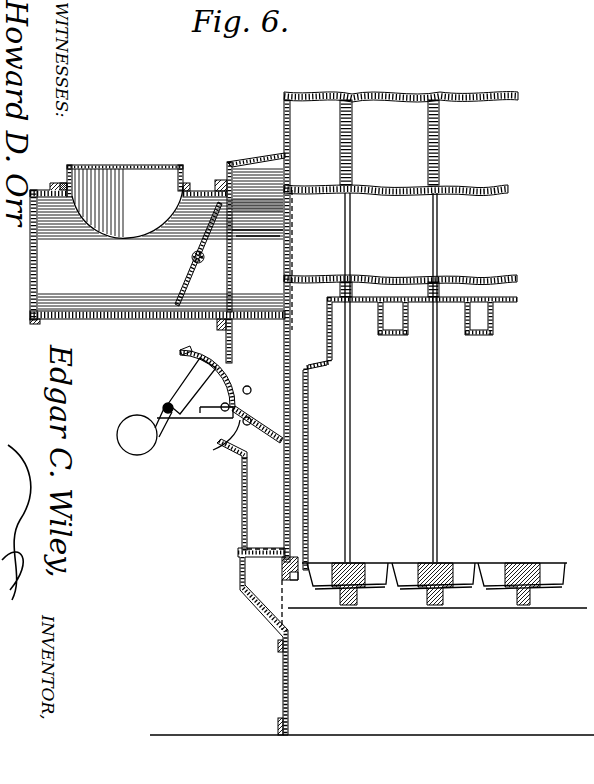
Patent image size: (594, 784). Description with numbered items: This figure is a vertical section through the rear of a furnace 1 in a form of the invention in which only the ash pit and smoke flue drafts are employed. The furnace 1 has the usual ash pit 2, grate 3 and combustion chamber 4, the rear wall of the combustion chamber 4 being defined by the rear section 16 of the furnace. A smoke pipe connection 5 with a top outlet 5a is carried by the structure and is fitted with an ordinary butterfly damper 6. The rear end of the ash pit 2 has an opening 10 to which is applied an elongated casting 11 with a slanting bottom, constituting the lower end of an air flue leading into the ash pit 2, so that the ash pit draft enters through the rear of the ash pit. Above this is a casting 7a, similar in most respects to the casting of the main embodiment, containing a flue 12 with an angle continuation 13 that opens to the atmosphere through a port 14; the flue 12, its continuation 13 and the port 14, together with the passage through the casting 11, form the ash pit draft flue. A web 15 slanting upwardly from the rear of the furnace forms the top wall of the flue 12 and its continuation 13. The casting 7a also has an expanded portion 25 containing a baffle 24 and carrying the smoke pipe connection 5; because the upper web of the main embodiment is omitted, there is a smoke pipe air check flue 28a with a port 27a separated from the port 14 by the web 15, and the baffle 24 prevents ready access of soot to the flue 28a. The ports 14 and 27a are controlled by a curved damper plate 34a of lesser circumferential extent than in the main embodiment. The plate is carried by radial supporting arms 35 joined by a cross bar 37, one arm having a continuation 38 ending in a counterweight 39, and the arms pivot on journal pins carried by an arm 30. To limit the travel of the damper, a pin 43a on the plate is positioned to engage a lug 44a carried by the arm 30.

The furnace 1 is at (404, 92).
The ash pit 2 is at (372, 671).
The grate 3 is at (412, 562).
The combustion chamber 4 is at (425, 335).
The smoke pipe connection 5 is at (157, 251).
The top outlet 5a is at (131, 185).
The butterfly damper 6 is at (188, 270).
The casting 7a is at (226, 340).
The opening 10 is at (287, 612).
The elongated casting 11 is at (263, 606).
The flue 12 is at (263, 504).
The angle continuation 13 is at (245, 452).
The port 14 is at (210, 468).
The web 15 is at (283, 430).
The rear section 16 is at (308, 495).
The baffle 24 is at (251, 310).
The expanded portion 25 is at (243, 160).
The port 27a is at (238, 396).
The smoke pipe air check flue 28a is at (236, 380).
The arm 30 is at (208, 418).
The curved damper plate 34a is at (192, 366).
The radial supporting arms 35 is at (195, 427).
The cross bar 37 is at (166, 404).
The continuation 38 is at (160, 418).
The counterweight 39 is at (125, 446).
The pin 43a is at (247, 406).
The lug 44a is at (258, 391).